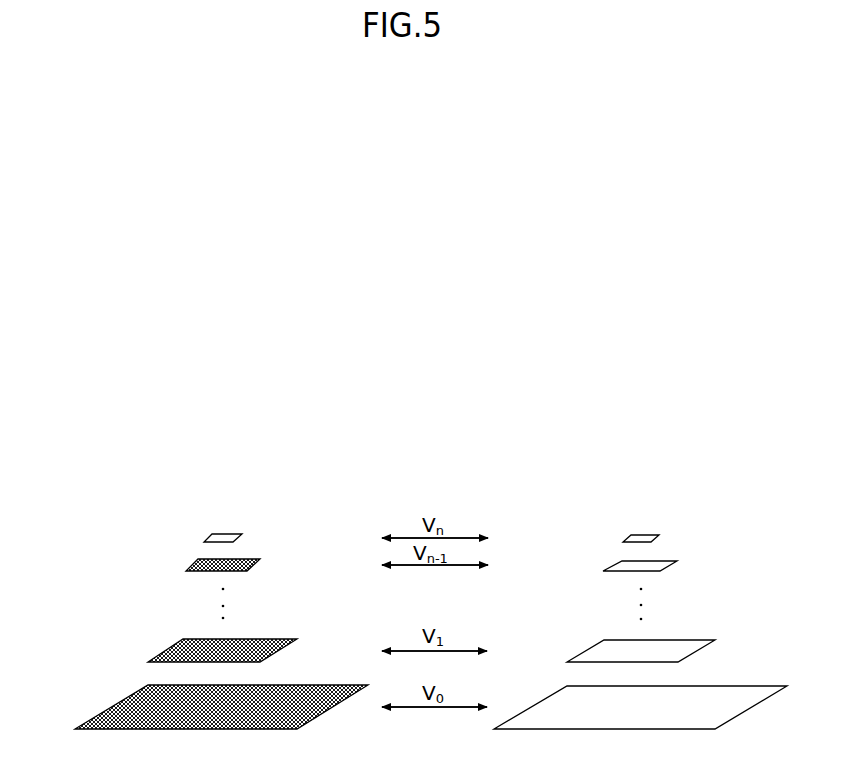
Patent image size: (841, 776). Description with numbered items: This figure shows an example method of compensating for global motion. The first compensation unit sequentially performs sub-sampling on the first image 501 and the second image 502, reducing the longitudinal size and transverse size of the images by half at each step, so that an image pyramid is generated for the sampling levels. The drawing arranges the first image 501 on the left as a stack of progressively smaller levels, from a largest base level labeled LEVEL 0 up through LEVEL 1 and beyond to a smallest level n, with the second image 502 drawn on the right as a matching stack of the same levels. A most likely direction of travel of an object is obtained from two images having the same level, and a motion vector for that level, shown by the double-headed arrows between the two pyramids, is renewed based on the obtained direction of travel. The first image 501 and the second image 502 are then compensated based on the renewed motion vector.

The first image 501 is at (198, 642).
The second image 502 is at (640, 646).
The level 0 image 0 is at (198, 707).
The level 1 image 1 is at (185, 646).